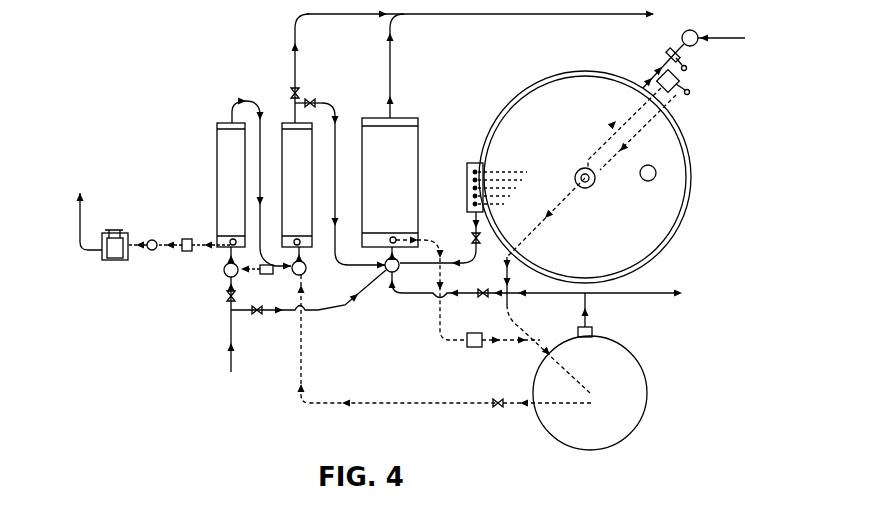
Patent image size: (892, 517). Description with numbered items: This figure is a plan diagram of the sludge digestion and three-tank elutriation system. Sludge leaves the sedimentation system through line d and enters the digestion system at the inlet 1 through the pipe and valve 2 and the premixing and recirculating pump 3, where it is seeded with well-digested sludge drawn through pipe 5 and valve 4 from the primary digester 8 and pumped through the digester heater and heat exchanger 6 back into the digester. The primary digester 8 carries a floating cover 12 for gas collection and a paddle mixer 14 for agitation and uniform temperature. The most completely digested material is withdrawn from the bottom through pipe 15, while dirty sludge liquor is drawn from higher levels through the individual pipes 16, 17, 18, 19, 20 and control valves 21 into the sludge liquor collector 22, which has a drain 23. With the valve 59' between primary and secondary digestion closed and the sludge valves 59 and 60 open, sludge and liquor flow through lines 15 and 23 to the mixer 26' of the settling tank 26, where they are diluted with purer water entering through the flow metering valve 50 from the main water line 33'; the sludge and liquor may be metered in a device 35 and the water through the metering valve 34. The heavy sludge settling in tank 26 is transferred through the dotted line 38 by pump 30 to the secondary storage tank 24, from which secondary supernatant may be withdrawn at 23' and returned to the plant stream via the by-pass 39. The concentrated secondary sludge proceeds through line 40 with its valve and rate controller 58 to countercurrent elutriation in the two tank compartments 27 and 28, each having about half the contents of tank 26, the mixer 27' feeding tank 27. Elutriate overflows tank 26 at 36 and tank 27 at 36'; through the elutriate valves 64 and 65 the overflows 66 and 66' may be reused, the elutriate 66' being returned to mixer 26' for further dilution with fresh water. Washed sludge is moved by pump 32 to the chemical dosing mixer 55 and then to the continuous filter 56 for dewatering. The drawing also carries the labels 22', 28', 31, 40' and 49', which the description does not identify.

The digestion system inlet 1 is at (698, 50).
The sludge removal line d is at (721, 30).
The pipe and valve 2 is at (676, 42).
The premixing and recirculating pump 3 is at (682, 62).
The valve 4 is at (661, 68).
The pipe 5 is at (632, 129).
The digester heater and heat exchanger 6 is at (674, 89).
The primary digester 8 is at (689, 204).
The floating cover 12 is at (587, 207).
The paddle mixer 14 is at (654, 180).
The bottom withdrawal pipe 15 is at (546, 217).
The sludge liquor pipe 16 is at (512, 172).
The sludge liquor pipe 17 is at (509, 182).
The sludge liquor pipe 18 is at (506, 191).
The sludge liquor pipe 19 is at (503, 201).
The sludge liquor pipe 20 is at (497, 211).
The control valves 21 is at (466, 199).
The sludge liquor collector 22 is at (473, 179).
The valve unit 22' is at (598, 315).
The drain 23 is at (440, 239).
The secondary supernatant withdrawal 23' is at (480, 289).
The secondary digester storage tank 24 is at (635, 367).
The sedimentation tank 26 is at (390, 182).
The tank compartment 27 is at (297, 185).
The tank compartment 28 is at (231, 185).
The mixer 26' is at (405, 259).
The mixer 27' is at (311, 264).
The pump 28' is at (220, 266).
The transfer pump 30 is at (473, 349).
The control unit 31 is at (258, 279).
The transfer pump 32 is at (190, 242).
The main water line 33' is at (232, 333).
The metering valve 34 is at (222, 306).
The metering device 35 is at (480, 9).
The elutriate overflow 36 is at (400, 66).
The elutriate overflow 36' is at (307, 68).
The transfer line 38 is at (493, 315).
The by-pass 39 is at (594, 300).
The secondary sludge line 40 is at (547, 392).
The return line 40' is at (398, 348).
The feed line 49' is at (352, 299).
The flow metering valve 50 is at (255, 314).
The chemical dosing mixer 55 is at (156, 242).
The continuous filter 56 is at (125, 265).
The valve and rate controller 58 is at (503, 408).
The sludge valve 59 is at (478, 285).
The valve 59' is at (518, 287).
The sludge valve 60 is at (486, 239).
The elutriate valve 64 is at (284, 101).
The elutriate valve 65 is at (316, 102).
The elutriate line 66 is at (261, 184).
The elutriate return line 66' is at (353, 186).